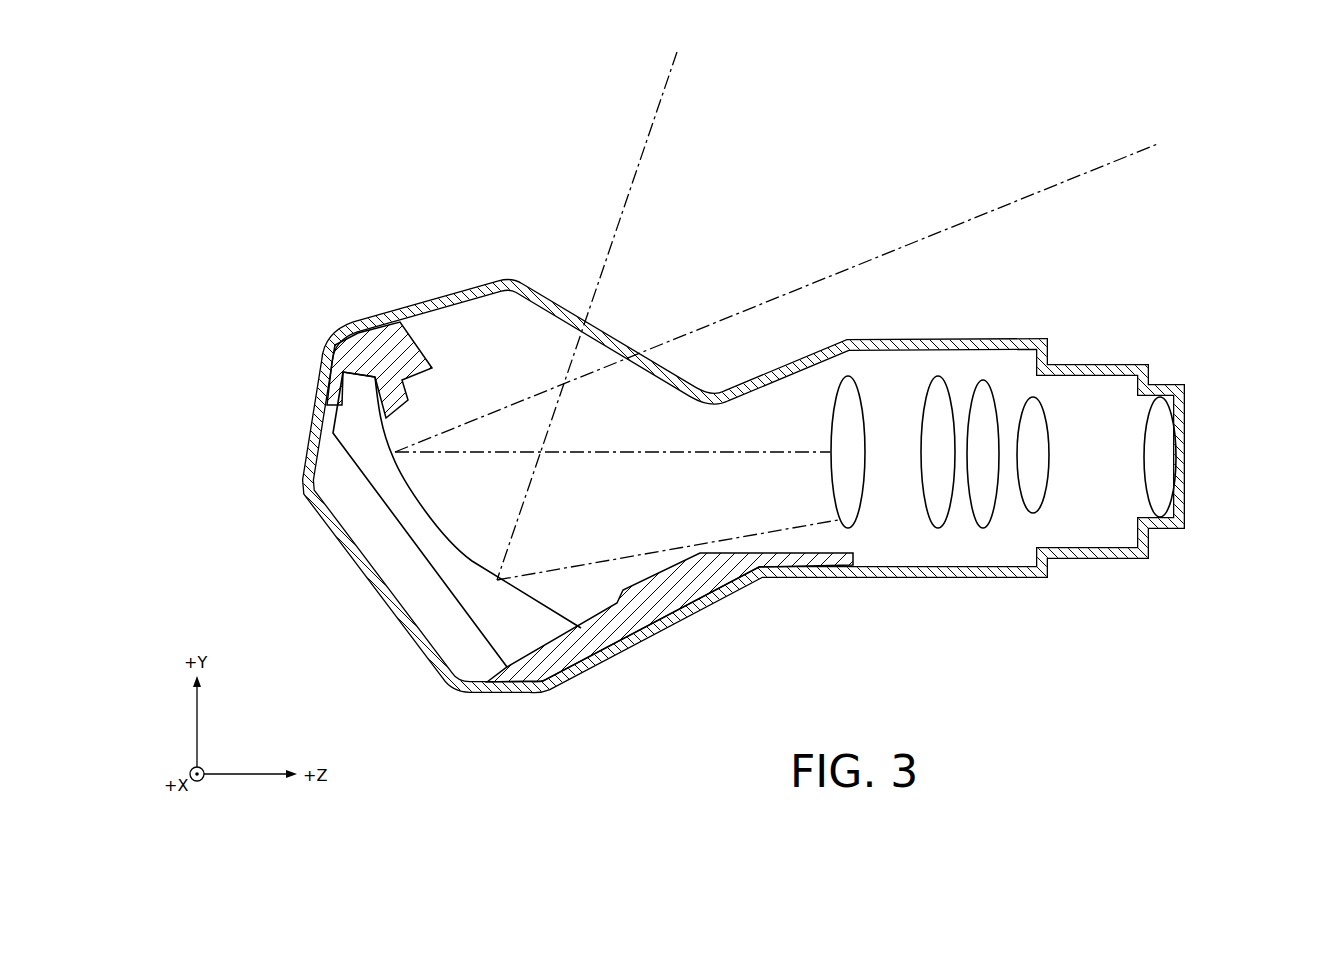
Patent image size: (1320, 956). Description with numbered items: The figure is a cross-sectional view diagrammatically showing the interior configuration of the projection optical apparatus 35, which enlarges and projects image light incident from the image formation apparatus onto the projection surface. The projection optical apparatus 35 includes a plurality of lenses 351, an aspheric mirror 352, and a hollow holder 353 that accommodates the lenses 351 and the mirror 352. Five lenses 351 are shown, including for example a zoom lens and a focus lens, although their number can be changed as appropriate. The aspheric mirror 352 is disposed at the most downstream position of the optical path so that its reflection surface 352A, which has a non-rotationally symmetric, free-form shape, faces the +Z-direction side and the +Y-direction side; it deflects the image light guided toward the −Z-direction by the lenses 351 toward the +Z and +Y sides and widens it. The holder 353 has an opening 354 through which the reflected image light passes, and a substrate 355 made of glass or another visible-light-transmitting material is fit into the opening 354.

The projection optical apparatus 35 is at (745, 416).
The lenses 351 is at (1033, 503).
The aspheric mirror 352 is at (516, 577).
The reflection surface 352A is at (555, 617).
The holder 353 is at (740, 590).
The opening 354 is at (630, 360).
The substrate 355 is at (602, 342).